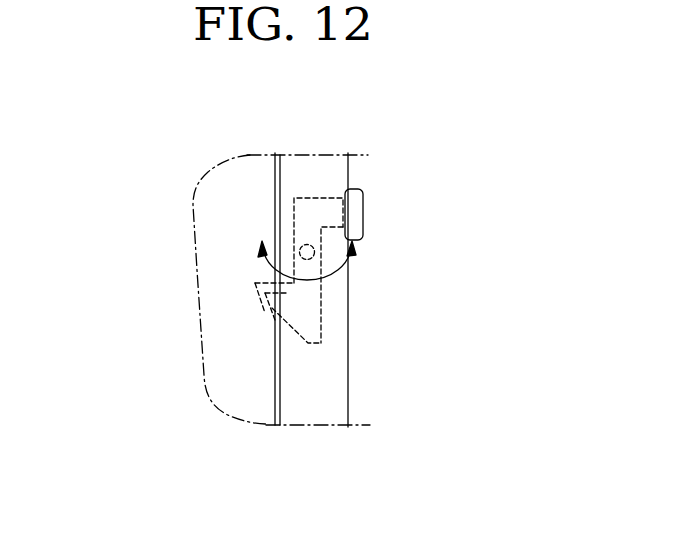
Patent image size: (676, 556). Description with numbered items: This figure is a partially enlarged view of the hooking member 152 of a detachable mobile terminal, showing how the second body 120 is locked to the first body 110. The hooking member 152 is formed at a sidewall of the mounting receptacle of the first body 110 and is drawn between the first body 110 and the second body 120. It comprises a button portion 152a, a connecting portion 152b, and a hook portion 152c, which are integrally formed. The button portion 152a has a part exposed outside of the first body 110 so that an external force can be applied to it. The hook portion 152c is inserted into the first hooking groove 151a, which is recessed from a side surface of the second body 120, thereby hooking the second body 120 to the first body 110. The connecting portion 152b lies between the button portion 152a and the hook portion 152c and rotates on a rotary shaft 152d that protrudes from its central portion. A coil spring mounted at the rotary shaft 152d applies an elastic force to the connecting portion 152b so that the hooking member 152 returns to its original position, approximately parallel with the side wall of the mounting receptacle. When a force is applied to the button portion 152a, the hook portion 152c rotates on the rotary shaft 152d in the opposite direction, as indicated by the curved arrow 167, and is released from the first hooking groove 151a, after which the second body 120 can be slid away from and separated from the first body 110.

The first body 110 is at (326, 391).
The second body 120 is at (221, 198).
The first hooking groove 151a is at (276, 317).
The hooking member 152 is at (407, 267).
The button portion 152a is at (363, 214).
The connecting portion 152b is at (313, 268).
The hook portion 152c is at (280, 293).
The rotary shaft 152d is at (314, 249).
The rotation direction 167 is at (260, 260).